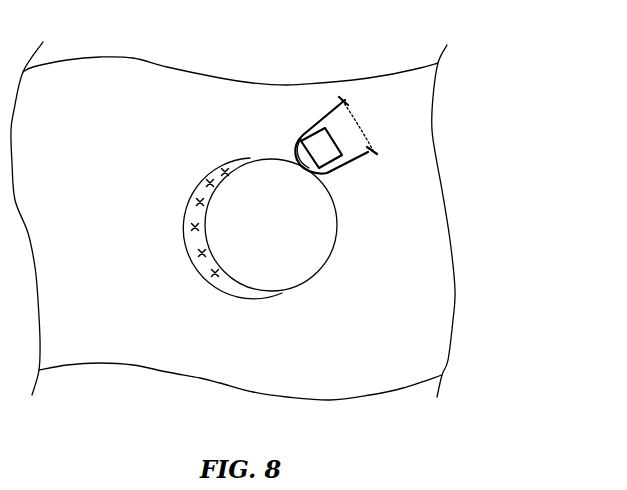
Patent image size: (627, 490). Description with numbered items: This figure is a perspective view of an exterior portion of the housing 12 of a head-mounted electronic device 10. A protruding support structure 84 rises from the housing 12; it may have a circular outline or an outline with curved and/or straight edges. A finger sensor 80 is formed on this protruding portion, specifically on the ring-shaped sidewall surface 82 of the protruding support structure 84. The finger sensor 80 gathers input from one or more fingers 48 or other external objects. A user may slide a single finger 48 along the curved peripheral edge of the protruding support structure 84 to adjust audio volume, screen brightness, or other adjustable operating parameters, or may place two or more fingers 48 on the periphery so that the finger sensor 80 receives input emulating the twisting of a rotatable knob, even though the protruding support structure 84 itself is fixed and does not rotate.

The electronic device 10 is at (555, 80).
The housing 12 is at (422, 93).
The finger 48 is at (330, 123).
The finger sensor 80 is at (193, 229).
The ring-shaped sidewall surface 82 is at (195, 190).
The protruding support structure 84 is at (278, 278).